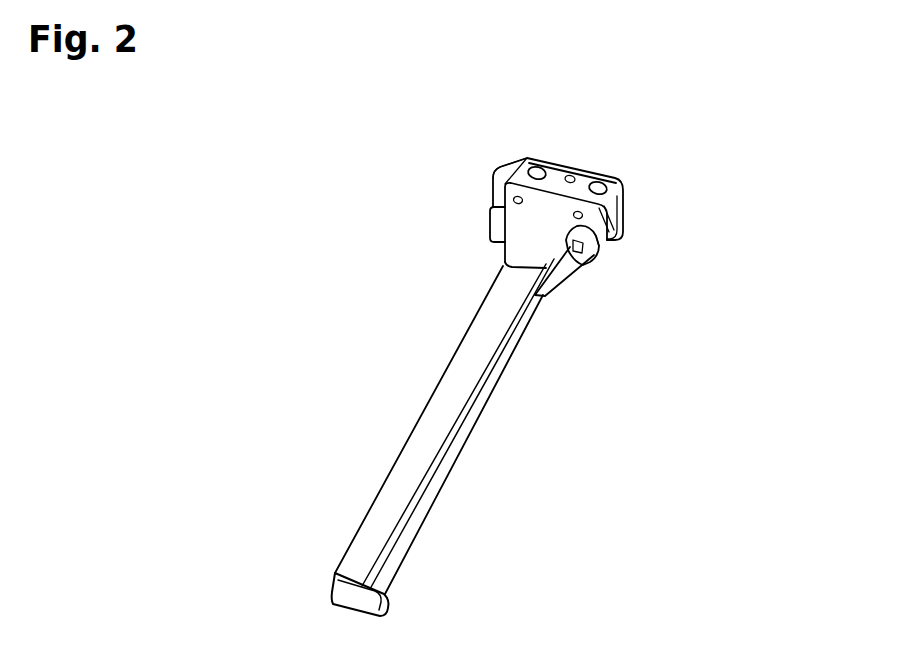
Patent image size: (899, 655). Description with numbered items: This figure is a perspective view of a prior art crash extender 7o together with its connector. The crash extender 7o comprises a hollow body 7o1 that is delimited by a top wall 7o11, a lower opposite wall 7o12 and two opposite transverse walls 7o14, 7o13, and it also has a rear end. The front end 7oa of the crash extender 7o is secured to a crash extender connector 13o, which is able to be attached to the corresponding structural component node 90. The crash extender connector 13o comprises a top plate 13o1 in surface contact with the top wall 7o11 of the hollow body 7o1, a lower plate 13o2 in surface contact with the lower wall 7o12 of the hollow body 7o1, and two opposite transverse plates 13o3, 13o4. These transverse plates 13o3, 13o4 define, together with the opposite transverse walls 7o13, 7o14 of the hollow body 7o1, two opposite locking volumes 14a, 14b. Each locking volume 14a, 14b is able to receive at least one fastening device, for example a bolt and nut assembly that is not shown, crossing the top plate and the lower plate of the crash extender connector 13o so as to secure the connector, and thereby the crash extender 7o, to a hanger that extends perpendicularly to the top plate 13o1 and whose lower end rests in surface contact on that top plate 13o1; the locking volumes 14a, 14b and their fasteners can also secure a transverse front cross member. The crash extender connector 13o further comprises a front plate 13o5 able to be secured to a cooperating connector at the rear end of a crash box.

The structural component node 90 is at (639, 145).
The crash extender connector 13o is at (559, 186).
The top plate 13o1 is at (566, 226).
The lower plate 13o2 is at (598, 243).
The transverse plate 13o3 is at (630, 207).
The transverse plate 13o4 is at (492, 206).
The front plate 13o5 is at (582, 168).
The locking volume 14a is at (478, 239).
The locking volume 14b is at (607, 270).
The crash extender 7o is at (492, 421).
The front end 7oa is at (579, 263).
The hollow body 7o1 is at (436, 437).
The top wall 7o11 is at (408, 419).
The lower wall 7o12 is at (433, 497).
The transverse wall 7o13 is at (473, 413).
The transverse wall 7o14 is at (413, 383).